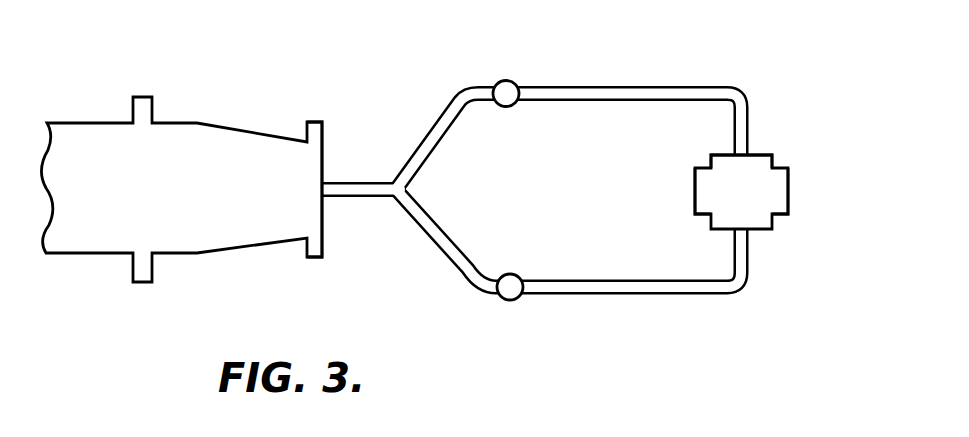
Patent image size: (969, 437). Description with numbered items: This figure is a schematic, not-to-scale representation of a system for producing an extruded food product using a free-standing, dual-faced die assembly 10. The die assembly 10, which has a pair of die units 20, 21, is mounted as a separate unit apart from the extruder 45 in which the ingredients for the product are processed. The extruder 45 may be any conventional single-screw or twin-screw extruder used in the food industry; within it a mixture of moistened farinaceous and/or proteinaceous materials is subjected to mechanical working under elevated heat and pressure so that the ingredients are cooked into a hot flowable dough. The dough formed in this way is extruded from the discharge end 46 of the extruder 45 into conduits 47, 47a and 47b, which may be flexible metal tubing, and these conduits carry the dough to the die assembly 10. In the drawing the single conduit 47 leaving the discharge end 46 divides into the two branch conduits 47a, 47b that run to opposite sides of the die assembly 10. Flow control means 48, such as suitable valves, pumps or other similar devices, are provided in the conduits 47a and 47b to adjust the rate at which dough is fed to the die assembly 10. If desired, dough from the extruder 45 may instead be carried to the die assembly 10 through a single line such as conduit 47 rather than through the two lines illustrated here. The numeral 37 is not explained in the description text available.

The die assembly 10 is at (809, 133).
The die unit 20 is at (792, 163).
The die unit 21 is at (703, 161).
The outlet ports 37 is at (694, 204).
The extruder 45 is at (172, 207).
The discharge end 46 is at (285, 135).
The conduit 47 is at (352, 182).
The conduit 47a is at (434, 118).
The conduit 47b is at (443, 267).
The flow control means 48 is at (504, 84).